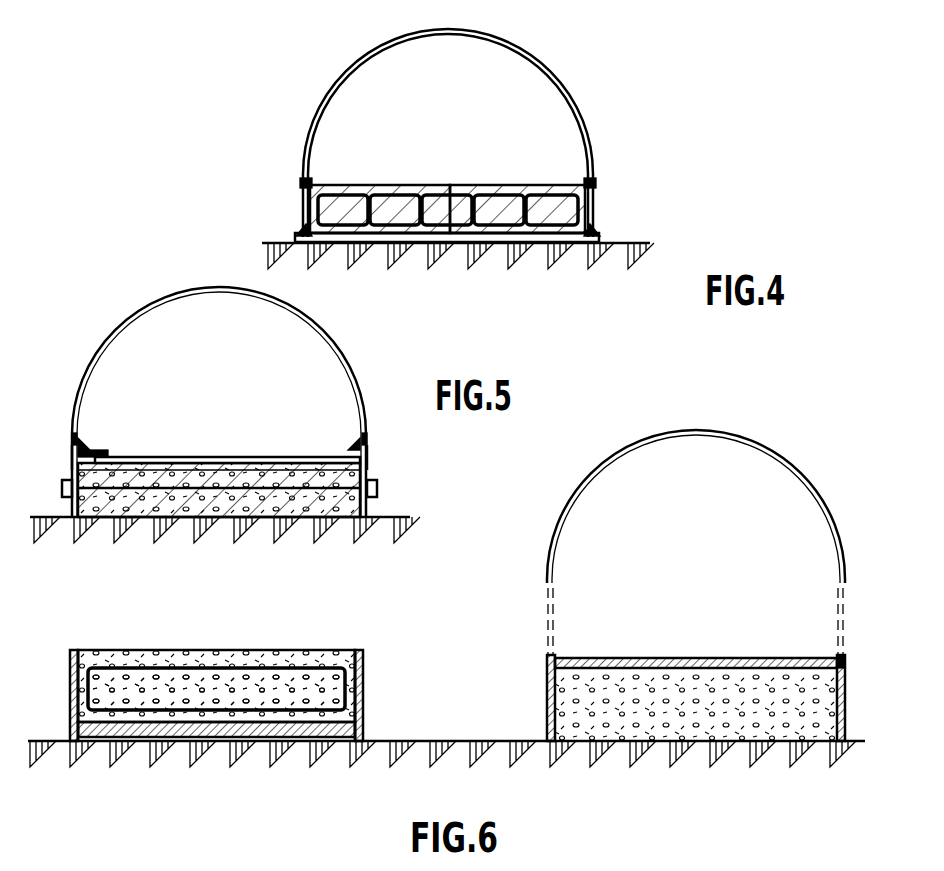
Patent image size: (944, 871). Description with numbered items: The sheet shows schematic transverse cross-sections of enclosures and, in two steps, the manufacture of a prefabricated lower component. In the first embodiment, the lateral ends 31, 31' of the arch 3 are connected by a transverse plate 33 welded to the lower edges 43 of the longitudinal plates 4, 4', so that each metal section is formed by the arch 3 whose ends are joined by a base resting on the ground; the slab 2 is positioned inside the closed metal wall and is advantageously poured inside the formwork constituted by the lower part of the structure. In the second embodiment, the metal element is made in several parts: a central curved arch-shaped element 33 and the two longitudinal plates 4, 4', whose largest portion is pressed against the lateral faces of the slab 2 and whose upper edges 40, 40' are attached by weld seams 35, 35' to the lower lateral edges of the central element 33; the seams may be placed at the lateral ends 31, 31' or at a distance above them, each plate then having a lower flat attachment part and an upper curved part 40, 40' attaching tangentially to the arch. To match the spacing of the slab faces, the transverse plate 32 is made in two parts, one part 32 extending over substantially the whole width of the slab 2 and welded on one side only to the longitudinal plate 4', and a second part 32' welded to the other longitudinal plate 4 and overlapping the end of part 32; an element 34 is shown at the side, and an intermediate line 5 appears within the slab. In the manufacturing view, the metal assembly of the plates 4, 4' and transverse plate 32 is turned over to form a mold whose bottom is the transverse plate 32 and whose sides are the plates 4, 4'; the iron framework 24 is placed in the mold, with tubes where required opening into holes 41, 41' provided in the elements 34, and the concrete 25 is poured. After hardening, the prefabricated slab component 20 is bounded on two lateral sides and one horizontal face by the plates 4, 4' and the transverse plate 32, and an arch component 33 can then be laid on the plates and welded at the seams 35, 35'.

In FIG. 4, the slab 2 is at (513, 186).
In FIG. 5, the slab 2 is at (200, 465).
In FIG. 4, the arch 3 is at (537, 58).
In FIG. 4, the longitudinal plate 4 is at (343, 196).
In FIG. 6, the longitudinal plate 4 is at (433, 695).
In FIG. 4, the longitudinal plate 4' is at (558, 192).
In FIG. 5, the longitudinal plate 4' is at (254, 489).
In FIG. 6, the longitudinal plate 4' is at (619, 695).
In FIG. 5, the intermediate floor 5 is at (170, 487).
In FIG. 6, the prefabricated slab component 20 is at (866, 653).
In FIG. 4, the iron framework 24 is at (452, 243).
In FIG. 6, the iron framework 24 is at (285, 668).
In FIG. 6, the concrete 25 is at (155, 650).
In FIG. 4, the lateral end of the arch 31 is at (441, 156).
In FIG. 5, the lateral end of the arch 31 is at (46, 446).
In FIG. 5, the lateral end of the arch 31' is at (405, 447).
In FIG. 5, the transverse plate 32 is at (227, 431).
In FIG. 6, the transverse plate 32 is at (457, 708).
In FIG. 5, the second part of the transverse plate 32' is at (106, 423).
In FIG. 4, the transverse plate / central curved arch-shaped element 33 is at (488, 243).
In FIG. 5, the transverse plate / central curved arch-shaped element 33 is at (172, 295).
In FIG. 6, the transverse plate / central curved arch-shaped element 33 is at (757, 437).
In FIG. 5, the element 34 is at (65, 497).
In FIG. 5, the weld seam 35 is at (217, 396).
In FIG. 6, the weld seam 35 is at (521, 593).
In FIG. 6, the weld seam 35' is at (860, 576).
In FIG. 5, the upper edge / upper curved part of the longitudinal plate 40 is at (50, 414).
In FIG. 5, the upper edge / upper curved part of the longitudinal plate 40' is at (389, 423).
In FIG. 6, the hole 41 is at (60, 680).
In FIG. 6, the hole 41' is at (381, 678).
In FIG. 4, the lower edge of the longitudinal plate 43 is at (300, 230).